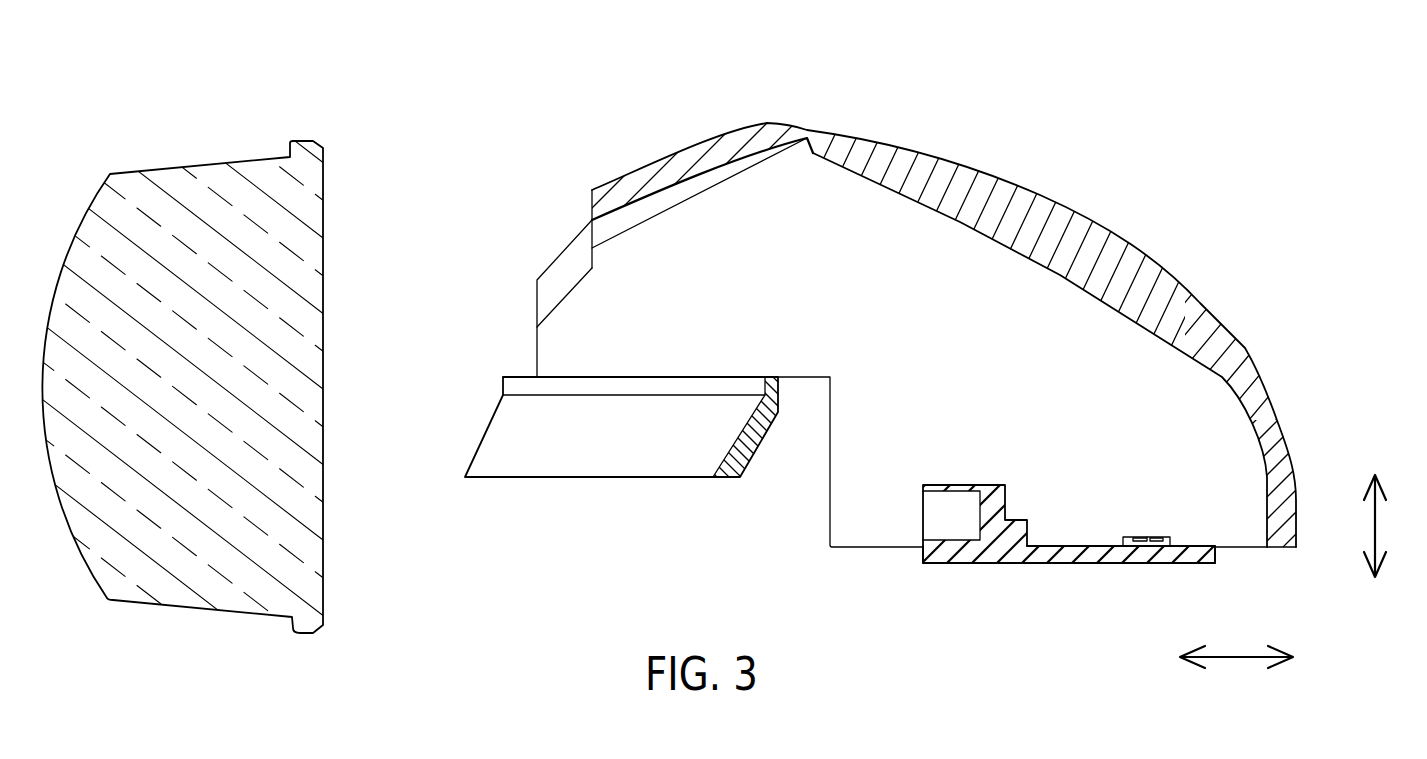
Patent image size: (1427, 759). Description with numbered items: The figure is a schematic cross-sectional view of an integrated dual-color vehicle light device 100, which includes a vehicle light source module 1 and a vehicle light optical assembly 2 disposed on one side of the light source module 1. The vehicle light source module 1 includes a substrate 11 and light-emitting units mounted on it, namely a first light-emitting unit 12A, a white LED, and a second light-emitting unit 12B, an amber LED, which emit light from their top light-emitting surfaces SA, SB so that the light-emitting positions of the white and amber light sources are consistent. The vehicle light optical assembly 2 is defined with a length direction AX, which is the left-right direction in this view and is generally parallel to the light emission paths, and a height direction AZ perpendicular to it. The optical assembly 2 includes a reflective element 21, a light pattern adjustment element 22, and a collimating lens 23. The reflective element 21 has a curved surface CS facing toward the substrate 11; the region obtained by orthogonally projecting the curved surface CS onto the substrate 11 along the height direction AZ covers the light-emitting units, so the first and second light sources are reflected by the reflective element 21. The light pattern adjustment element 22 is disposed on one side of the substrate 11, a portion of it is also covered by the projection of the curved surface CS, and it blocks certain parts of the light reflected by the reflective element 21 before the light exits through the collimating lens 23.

The integrated dual-color vehicle light device 100 is at (140, 78).
The vehicle light source module 1 is at (974, 559).
The substrate 11 is at (1070, 558).
The first light-emitting unit 12A is at (1135, 546).
The second light-emitting unit 12B is at (1157, 547).
The vehicle light optical assembly 2 is at (977, 150).
The reflective element 21 is at (1163, 272).
The light pattern adjustment element 22 is at (727, 472).
The collimating lens 23 is at (97, 213).
The curved surface CS is at (972, 233).
The light-emitting surface SA is at (1132, 533).
The light-emitting surface SB is at (1164, 533).
The height direction AZ is at (1355, 526).
The length direction AX is at (1236, 643).